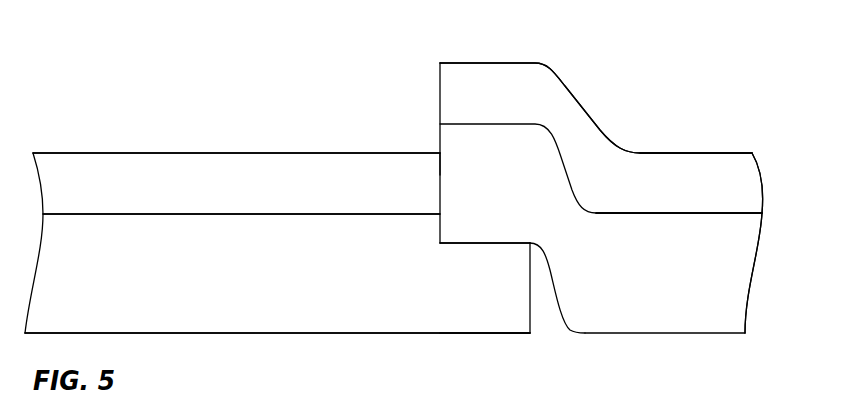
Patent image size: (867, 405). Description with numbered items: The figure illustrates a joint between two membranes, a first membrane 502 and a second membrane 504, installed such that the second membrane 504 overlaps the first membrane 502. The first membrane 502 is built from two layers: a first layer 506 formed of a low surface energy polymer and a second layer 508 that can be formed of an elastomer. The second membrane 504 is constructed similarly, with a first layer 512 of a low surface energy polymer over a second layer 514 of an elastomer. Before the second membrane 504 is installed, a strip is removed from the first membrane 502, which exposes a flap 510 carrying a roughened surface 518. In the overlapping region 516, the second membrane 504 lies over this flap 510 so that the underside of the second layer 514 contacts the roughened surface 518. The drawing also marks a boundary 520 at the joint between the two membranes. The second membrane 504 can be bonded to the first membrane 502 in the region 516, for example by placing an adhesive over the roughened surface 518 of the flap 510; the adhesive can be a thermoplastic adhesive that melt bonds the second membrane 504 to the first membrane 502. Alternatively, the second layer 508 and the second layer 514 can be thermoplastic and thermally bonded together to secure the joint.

The first membrane 502 is at (127, 109).
The second membrane 504 is at (624, 104).
The first layer 506 is at (135, 172).
The second layer 508 is at (240, 302).
The flap 510 is at (455, 316).
The first layer 512 is at (700, 176).
The second layer 514 is at (712, 322).
The region 516 is at (538, 62).
The roughened surface 518 is at (489, 243).
The joint line 520 is at (440, 172).